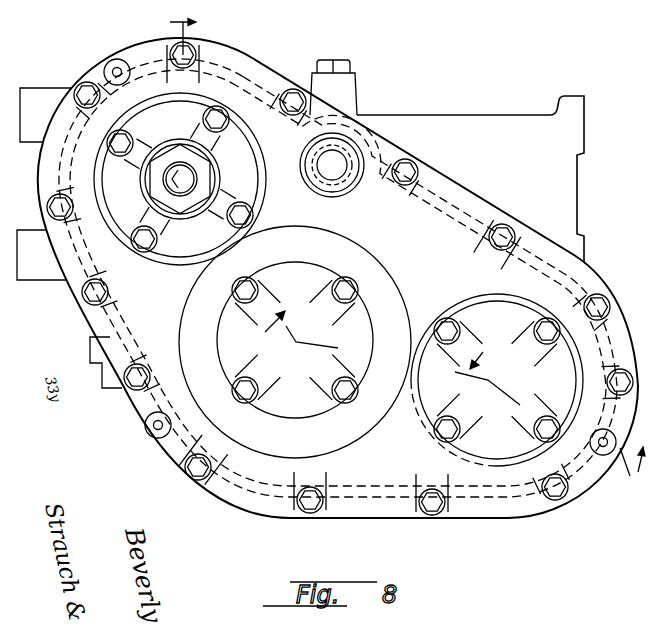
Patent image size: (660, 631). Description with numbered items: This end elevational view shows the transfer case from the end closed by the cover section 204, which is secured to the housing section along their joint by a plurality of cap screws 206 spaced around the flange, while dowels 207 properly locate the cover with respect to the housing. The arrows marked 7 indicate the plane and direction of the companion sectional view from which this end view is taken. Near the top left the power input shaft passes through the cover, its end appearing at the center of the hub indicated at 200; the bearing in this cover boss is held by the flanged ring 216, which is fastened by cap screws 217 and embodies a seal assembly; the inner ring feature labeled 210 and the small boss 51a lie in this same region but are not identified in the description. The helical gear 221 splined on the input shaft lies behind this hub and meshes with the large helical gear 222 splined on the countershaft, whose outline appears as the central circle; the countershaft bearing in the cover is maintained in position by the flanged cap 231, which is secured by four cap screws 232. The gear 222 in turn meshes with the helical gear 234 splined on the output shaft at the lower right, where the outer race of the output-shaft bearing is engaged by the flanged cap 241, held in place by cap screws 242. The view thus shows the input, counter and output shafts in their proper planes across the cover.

The cover section 204 is at (430, 262).
The cap screws 206 is at (198, 50).
The dowels 207 is at (115, 60).
The section line 7- 7 is at (412, 239).
The helical gear 221 is at (267, 170).
The cap screws 217 is at (205, 118).
The flanged ring 216 is at (190, 222).
The bearing ring 210 is at (143, 190).
The shaft 200 is at (185, 178).
The boss 51a is at (318, 160).
The helical gear 222 is at (354, 240).
The flanged cap 231 is at (307, 375).
The cap screws 232 is at (334, 290).
The helical gear 234 is at (500, 294).
The flanged cap 241 is at (525, 377).
The cap screws 242 is at (534, 431).